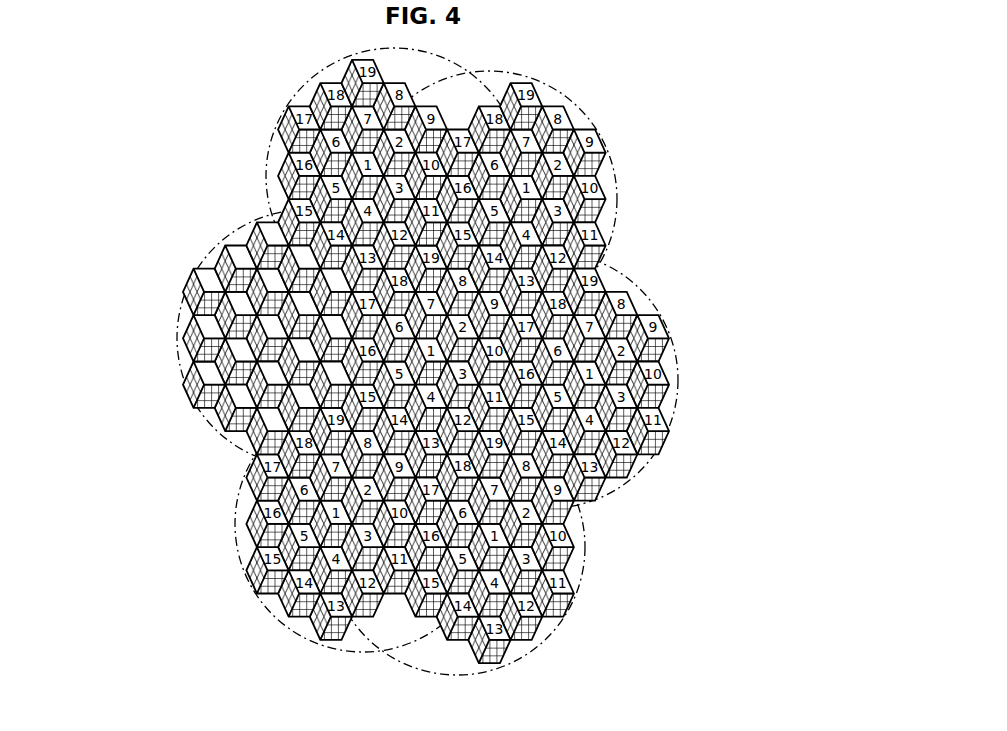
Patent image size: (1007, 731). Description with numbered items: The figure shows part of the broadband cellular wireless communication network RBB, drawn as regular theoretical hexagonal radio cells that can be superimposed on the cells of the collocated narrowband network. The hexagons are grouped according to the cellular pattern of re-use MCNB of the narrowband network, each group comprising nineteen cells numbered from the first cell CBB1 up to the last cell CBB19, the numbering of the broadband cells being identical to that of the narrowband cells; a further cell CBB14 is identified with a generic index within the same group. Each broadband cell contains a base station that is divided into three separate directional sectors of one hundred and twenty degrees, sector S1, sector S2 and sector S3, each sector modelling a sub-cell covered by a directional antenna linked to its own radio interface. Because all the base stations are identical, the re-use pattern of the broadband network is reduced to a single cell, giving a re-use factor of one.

The broadband cellular wireless communication network RBB is at (649, 109).
The broadband network cell CBB1 is at (601, 180).
The cellular pattern of re-use MCNB is at (262, 171).
The first sector S1 is at (667, 310).
The second sector S2 is at (662, 428).
The third sector S3 is at (188, 398).
The broadband network cell CBB19 is at (166, 228).
The broadband network cell CBB14 is at (152, 440).